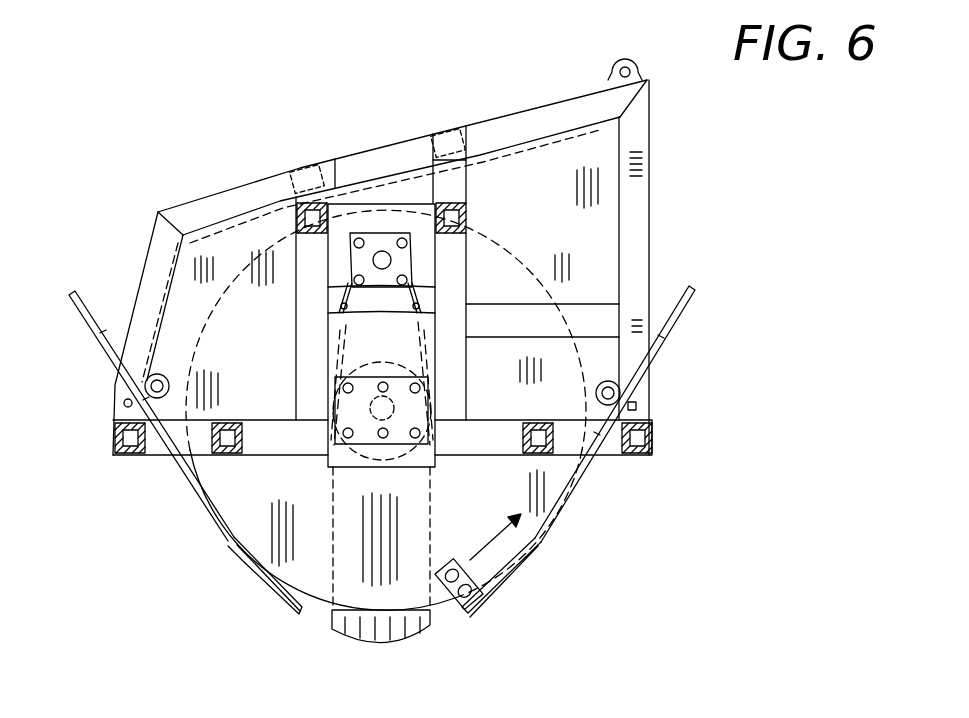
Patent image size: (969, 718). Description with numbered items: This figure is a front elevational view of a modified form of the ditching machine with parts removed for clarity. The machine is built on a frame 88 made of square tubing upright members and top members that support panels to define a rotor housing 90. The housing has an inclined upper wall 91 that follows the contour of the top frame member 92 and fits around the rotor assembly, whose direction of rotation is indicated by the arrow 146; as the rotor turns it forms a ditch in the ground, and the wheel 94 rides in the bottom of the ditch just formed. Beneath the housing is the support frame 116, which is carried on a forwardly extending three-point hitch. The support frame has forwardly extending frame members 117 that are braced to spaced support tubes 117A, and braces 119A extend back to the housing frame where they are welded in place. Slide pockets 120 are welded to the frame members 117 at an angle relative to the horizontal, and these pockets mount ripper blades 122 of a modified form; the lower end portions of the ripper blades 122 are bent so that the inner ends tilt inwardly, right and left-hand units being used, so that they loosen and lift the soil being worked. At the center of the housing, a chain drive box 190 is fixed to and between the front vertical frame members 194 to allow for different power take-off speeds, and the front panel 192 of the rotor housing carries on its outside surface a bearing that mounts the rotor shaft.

The frame 88 is at (150, 274).
The rotor housing 90 is at (598, 235).
The inclined upper wall 91 is at (545, 140).
The top frame member 92 is at (398, 145).
The wheel 94 is at (390, 630).
The support frame 116 is at (110, 432).
The frame members 117 is at (115, 457).
The support tubes 117A is at (240, 453).
The braces 119A is at (297, 211).
The slide pockets 120 is at (170, 468).
The ripper blades 122 is at (220, 540).
The arrow 146 is at (470, 558).
The chain drive box 190 is at (417, 272).
The front panel 192 is at (453, 183).
The front vertical frame members 194 is at (300, 342).